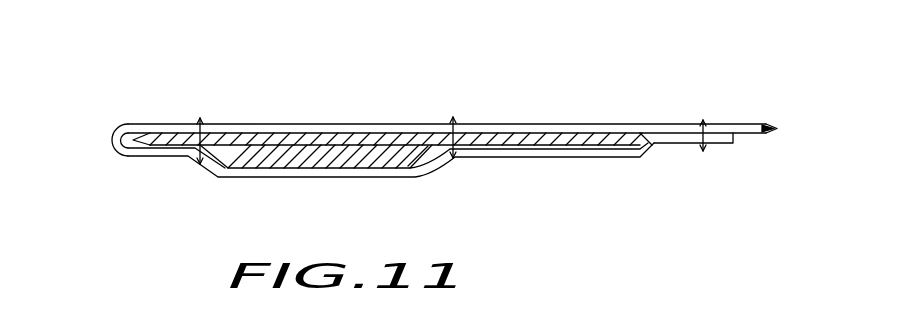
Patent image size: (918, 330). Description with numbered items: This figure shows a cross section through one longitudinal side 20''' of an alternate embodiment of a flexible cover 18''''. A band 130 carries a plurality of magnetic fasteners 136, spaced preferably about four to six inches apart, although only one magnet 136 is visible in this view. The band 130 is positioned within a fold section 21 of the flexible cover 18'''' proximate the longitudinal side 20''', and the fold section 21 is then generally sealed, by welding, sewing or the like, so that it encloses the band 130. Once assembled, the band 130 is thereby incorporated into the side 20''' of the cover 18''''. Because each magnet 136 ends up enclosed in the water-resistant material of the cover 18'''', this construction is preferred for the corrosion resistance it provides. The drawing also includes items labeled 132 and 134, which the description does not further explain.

The flexible cover 18'''' is at (668, 96).
The longitudinal side 20''' is at (115, 103).
The fold section 21 is at (200, 119).
The band 130 is at (434, 123).
The bottom sheet 132 is at (398, 166).
The top cover sheet 134 is at (327, 123).
The magnetic fastener 136 is at (292, 159).